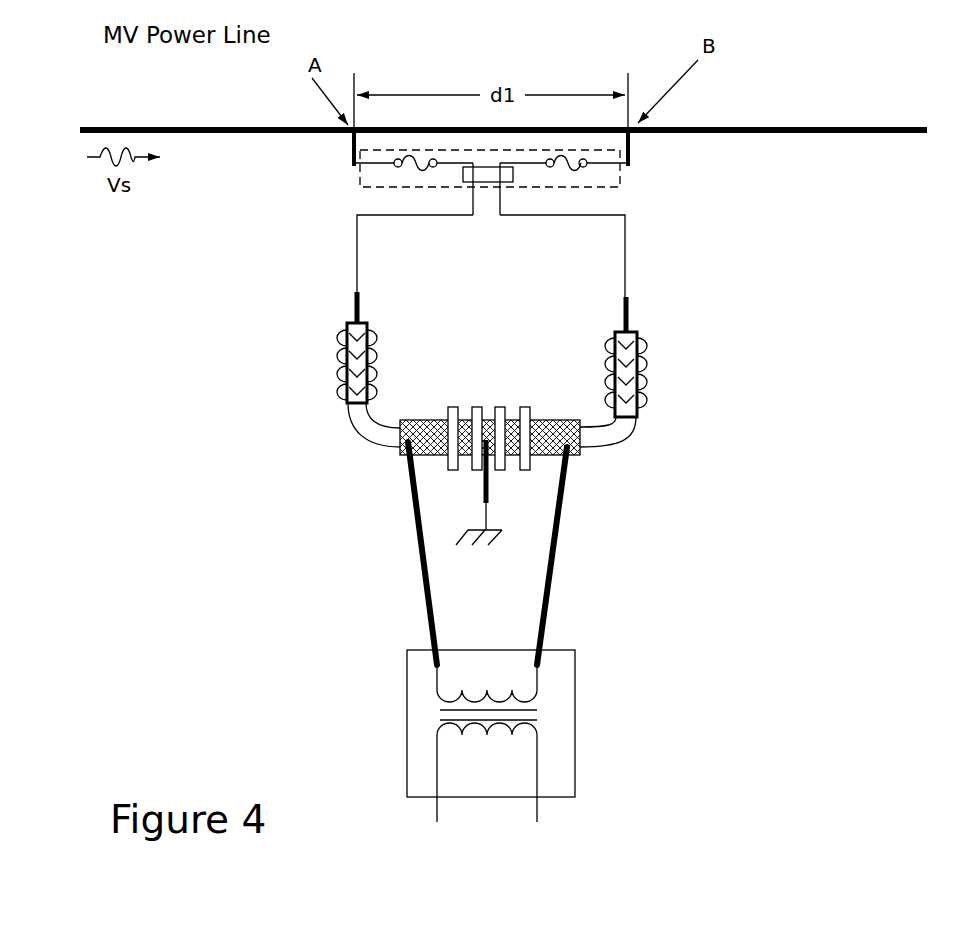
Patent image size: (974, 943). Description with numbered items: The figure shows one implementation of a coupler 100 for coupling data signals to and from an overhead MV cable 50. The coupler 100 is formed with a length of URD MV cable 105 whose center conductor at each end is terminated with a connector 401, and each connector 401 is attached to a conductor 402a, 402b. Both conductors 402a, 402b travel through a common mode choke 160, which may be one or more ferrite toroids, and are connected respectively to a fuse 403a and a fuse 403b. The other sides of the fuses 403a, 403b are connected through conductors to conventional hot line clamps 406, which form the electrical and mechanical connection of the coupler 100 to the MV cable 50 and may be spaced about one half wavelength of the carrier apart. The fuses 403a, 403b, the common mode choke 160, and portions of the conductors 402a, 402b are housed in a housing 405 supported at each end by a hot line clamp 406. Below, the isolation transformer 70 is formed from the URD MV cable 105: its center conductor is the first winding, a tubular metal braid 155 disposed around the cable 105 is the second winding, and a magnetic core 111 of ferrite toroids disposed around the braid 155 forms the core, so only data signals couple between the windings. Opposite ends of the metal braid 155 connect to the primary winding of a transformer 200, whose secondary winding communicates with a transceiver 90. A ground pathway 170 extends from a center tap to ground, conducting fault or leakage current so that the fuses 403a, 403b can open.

The overhead MV cable 50 is at (307, 128).
The hot line clamp 406 is at (350, 150).
The housing 405 is at (621, 170).
The fuse 403a is at (398, 170).
The fuse 403b is at (585, 170).
The common mode choke 160 is at (492, 180).
The conductor 402a is at (354, 242).
The conductor 402b is at (628, 252).
The connector 401 is at (352, 302).
The URD MV cable 105 is at (612, 442).
The coupler 100 is at (265, 408).
The tubular metal braid 155 is at (547, 423).
The isolation transformer 70 is at (457, 375).
The magnetic core 111 is at (498, 400).
The ground pathway 170 is at (488, 498).
The transformer 200 is at (405, 722).
The transceiver 90 is at (500, 796).